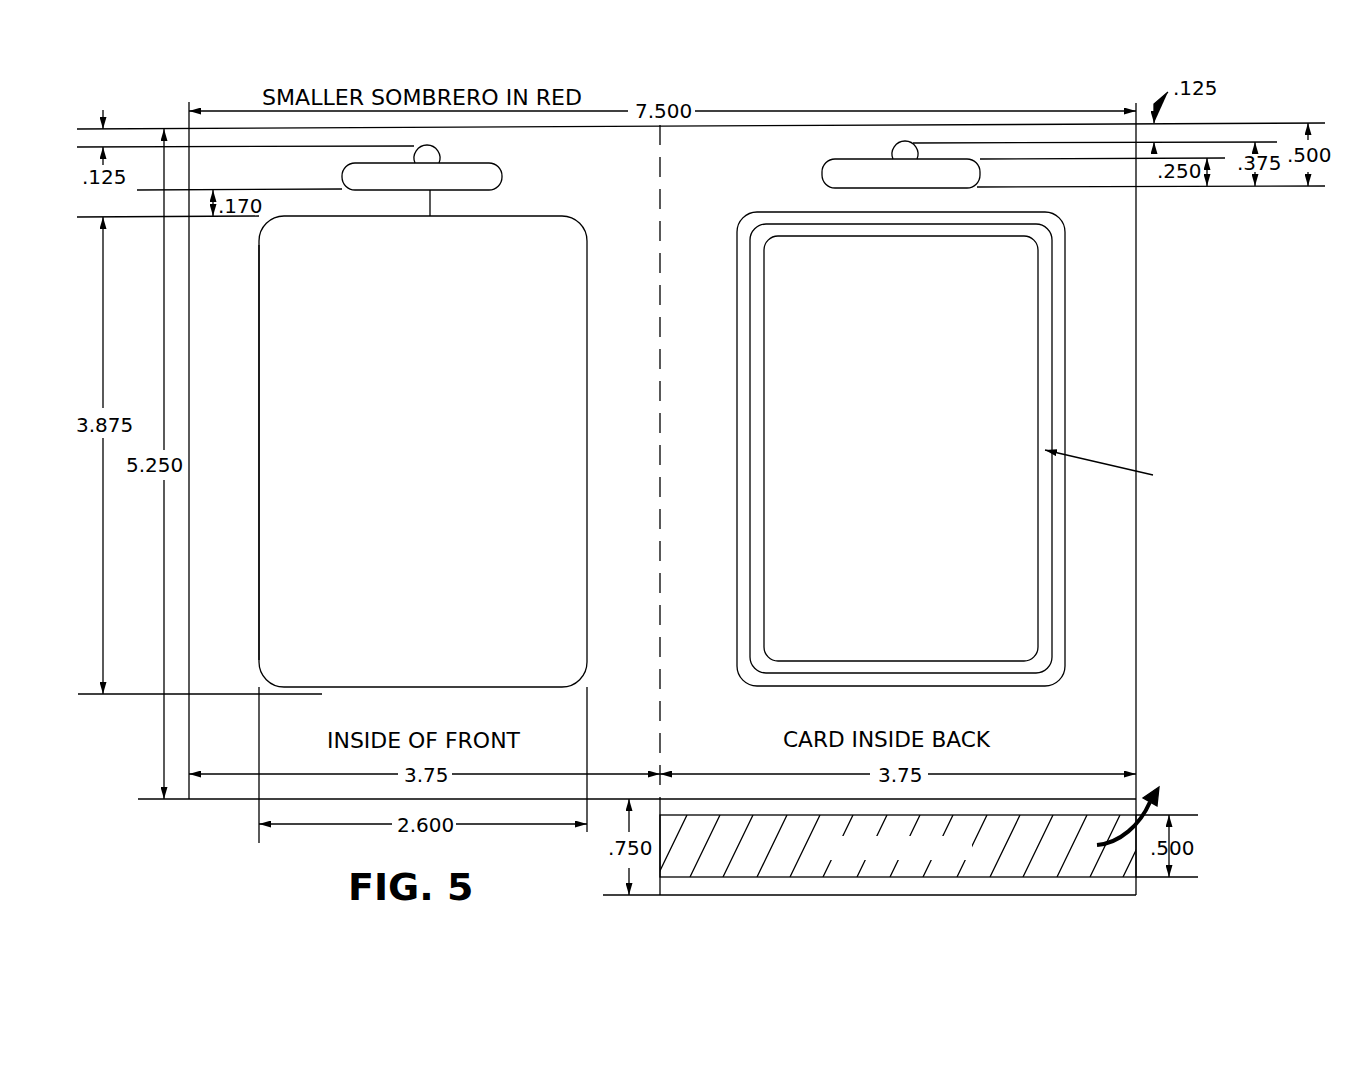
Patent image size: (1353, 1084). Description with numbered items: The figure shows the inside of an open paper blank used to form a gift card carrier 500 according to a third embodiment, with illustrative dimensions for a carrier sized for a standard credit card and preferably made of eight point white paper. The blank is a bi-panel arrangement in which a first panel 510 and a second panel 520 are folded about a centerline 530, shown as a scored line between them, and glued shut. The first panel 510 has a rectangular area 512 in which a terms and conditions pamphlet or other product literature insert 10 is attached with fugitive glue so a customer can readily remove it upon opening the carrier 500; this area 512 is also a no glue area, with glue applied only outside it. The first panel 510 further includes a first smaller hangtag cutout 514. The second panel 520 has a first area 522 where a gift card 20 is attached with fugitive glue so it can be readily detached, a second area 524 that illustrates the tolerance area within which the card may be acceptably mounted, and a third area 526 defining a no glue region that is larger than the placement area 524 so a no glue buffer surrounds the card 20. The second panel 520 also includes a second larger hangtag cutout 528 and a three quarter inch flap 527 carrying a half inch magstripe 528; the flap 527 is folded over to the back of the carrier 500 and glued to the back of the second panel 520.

The product literature insert 10 is at (440, 582).
The gift card 20 is at (918, 462).
The gift card carrier 500 is at (1202, 283).
The first panel 510 is at (327, 727).
The rectangular area 512 is at (259, 482).
The first smaller hangtag cutout 514 is at (503, 183).
The second panel 520 is at (731, 619).
The first area 522 is at (1038, 340).
The second area 524 is at (1058, 380).
The third area 526 is at (1067, 562).
The flap 527 is at (1120, 886).
The magstripe 528 is at (822, 175).
The centerline 530 is at (660, 213).